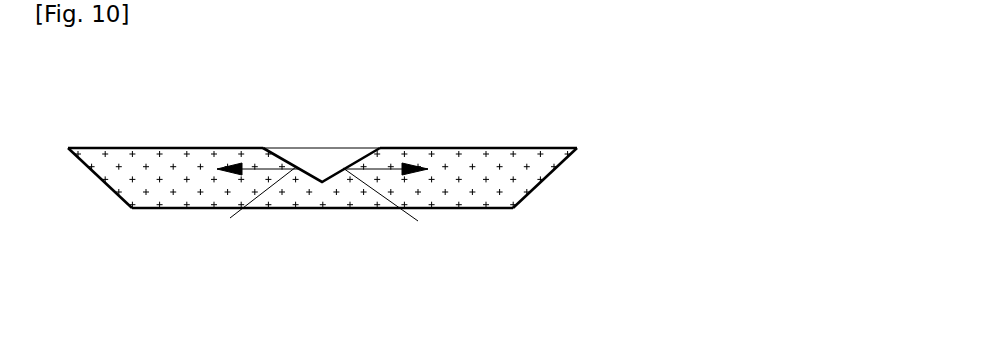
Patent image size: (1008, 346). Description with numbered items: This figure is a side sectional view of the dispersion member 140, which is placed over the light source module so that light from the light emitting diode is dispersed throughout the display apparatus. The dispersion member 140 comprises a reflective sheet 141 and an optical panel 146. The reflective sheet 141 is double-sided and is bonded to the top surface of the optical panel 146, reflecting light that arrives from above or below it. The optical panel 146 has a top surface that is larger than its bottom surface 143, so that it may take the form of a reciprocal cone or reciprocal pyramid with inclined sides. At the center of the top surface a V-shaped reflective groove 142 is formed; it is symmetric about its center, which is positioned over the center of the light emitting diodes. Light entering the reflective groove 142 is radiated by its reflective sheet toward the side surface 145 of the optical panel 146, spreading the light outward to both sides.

The dispersion member 140 is at (99, 56).
The reflective sheet 141 is at (143, 147).
The V-shaped reflective groove 142 is at (296, 167).
The bottom surface 143 is at (168, 210).
The side surface 145 is at (548, 179).
The optical panel 146 is at (128, 181).